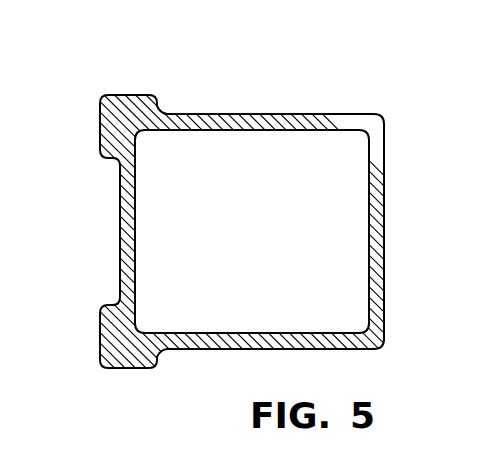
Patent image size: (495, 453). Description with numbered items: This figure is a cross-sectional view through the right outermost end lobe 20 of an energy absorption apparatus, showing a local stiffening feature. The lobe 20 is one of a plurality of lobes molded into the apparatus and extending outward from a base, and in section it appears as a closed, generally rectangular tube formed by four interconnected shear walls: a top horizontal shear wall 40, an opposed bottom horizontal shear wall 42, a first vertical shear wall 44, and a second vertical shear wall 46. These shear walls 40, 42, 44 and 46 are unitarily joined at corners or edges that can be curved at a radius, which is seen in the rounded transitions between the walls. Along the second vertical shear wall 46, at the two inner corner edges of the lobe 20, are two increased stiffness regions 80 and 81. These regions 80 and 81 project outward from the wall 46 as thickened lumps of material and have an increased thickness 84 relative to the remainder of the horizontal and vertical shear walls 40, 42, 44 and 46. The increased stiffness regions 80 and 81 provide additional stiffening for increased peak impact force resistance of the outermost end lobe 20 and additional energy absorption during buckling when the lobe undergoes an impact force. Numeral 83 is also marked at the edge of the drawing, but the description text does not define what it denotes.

The right outermost end lobe 20 is at (339, 96).
The top horizontal shear wall 40 is at (236, 114).
The bottom horizontal shear wall 42 is at (218, 350).
The first vertical shear wall 44 is at (385, 222).
The second vertical shear wall 46 is at (120, 240).
The increased stiffness region 80 is at (130, 340).
The increased stiffness region 81 is at (121, 121).
The increased thickness 84 is at (132, 123).
The flange surface 83 is at (60, 449).